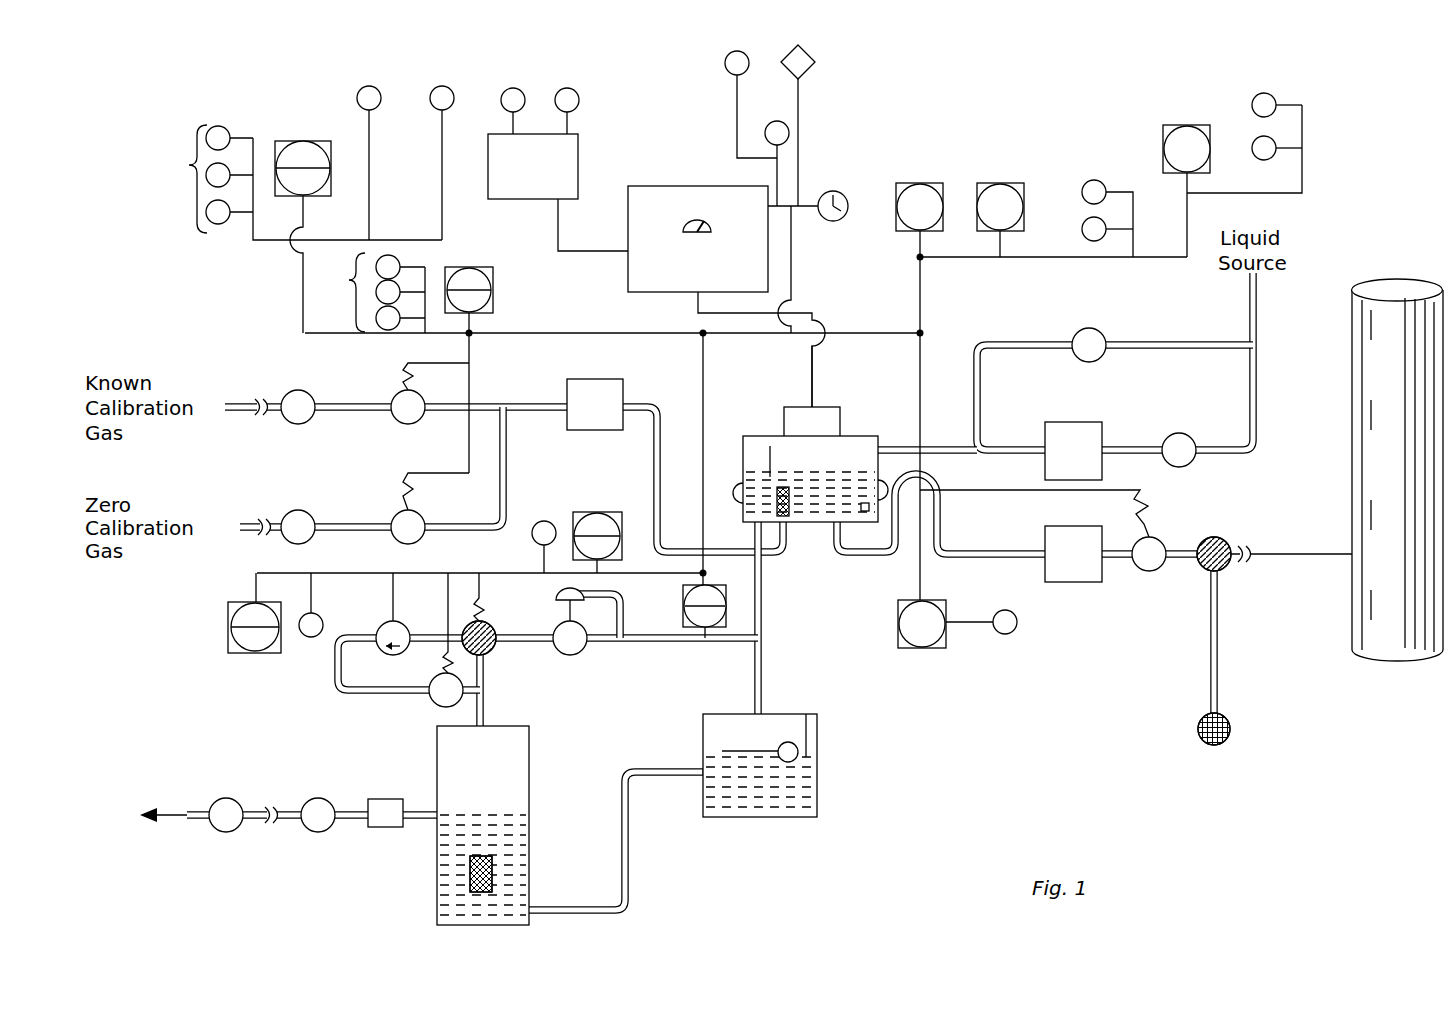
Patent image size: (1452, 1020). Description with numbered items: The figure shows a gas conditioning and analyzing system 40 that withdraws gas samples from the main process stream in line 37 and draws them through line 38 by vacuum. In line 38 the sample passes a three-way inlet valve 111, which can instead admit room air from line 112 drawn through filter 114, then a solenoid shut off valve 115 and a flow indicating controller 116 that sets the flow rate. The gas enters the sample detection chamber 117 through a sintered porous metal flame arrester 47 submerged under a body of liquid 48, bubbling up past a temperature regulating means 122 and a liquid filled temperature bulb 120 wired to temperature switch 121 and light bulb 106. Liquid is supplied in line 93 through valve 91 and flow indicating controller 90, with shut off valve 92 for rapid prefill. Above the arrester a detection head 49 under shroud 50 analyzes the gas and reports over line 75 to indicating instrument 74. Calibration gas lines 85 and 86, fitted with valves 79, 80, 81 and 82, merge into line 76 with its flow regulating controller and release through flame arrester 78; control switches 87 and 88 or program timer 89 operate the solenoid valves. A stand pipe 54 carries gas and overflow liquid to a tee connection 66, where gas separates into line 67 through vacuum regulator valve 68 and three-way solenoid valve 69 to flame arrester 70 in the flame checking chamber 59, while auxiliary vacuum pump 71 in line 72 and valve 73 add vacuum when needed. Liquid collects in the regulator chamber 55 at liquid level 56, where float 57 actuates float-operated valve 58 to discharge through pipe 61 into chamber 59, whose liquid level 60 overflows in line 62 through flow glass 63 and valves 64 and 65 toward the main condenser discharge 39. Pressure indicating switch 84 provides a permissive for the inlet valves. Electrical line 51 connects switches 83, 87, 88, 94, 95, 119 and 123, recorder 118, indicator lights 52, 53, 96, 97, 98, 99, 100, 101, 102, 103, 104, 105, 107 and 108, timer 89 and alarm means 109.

The main process stream line 37 is at (1352, 407).
The sample line 38 is at (1296, 553).
The exhaust line 39 is at (196, 822).
The gas conditioning and analyzing system 40 is at (1328, 106).
The sintered porous metal flame arrester 47 is at (833, 522).
The body of liquid 48 is at (745, 480).
The detection head 49 is at (784, 415).
The shroud 50 is at (857, 440).
The electrical line 51 is at (545, 333).
The indicator lights 52 is at (186, 162).
The indicator lights 53 is at (348, 278).
The stand pipe 54 is at (764, 636).
The liquid level regulator chamber 55 is at (817, 735).
The liquid level 56 is at (806, 712).
The float 57 is at (779, 745).
The float-operated valve 58 is at (707, 787).
The flame checking chamber 59 is at (529, 745).
The liquid level 60 is at (500, 814).
The pipe 61 is at (576, 915).
The line 62 is at (421, 808).
The flow glass 63 is at (386, 827).
The valve 64 is at (321, 798).
The valve 65 is at (228, 798).
The tee connection 66 is at (764, 641).
The gas line 67 is at (666, 645).
The vacuum regulator valve 68 is at (582, 650).
The three-way solenoid valve 69 is at (486, 626).
The sintered metal flame arrester 70 is at (470, 881).
The auxiliary vacuum pump 71 is at (401, 624).
The line 72 is at (347, 696).
The valve 73 is at (432, 703).
The indicating instrument 74 is at (652, 186).
The line 75 is at (698, 313).
The line 76 is at (521, 402).
The flame arrester 78 is at (790, 520).
The valve 79 is at (307, 421).
The solenoid operated valve 80 is at (417, 421).
The valve 81 is at (312, 537).
The solenoid operated valve 82 is at (402, 512).
The switch 83 is at (600, 512).
The pressure indicating switch 84 is at (683, 601).
The gas inlet line 85 is at (241, 404).
The gas inlet line 86 is at (257, 524).
The control switch 87 is at (469, 267).
The control switch 88 is at (303, 141).
The program timer 89 is at (828, 190).
The flow indicating controller 90 is at (1076, 422).
The valve 91 is at (1180, 433).
The shut off valve 92 is at (1093, 328).
The liquid line 93 is at (1257, 301).
The switch 94 is at (917, 183).
The switch 95 is at (997, 183).
The indicator light 96 is at (375, 109).
The indicator light 97 is at (446, 87).
The indicator light 98 is at (501, 104).
The indicator light 99 is at (579, 100).
The indicator light 100 is at (725, 66).
The indicator light 101 is at (772, 122).
The indicator light 102 is at (1088, 181).
The indicator light 103 is at (1083, 236).
The indicator light 104 is at (1262, 160).
The indicator light 105 is at (1265, 93).
The light bulb 106 is at (1014, 630).
The indicator light 107 is at (541, 521).
The indicator light 108 is at (303, 637).
The alarm means 109 is at (815, 62).
The three-way inlet valve 111 is at (1216, 537).
The room air line 112 is at (1210, 643).
The filter 114 is at (1230, 729).
The solenoid shut off valve 115 is at (1156, 537).
The flow indicating controller 116 is at (1090, 584).
The sample detection chamber 117 is at (880, 463).
The recorder 118 is at (578, 146).
The switch 119 is at (1175, 125).
The liquid filled temperature bulb 120 is at (868, 511).
The temperature switch 121 is at (930, 648).
The refrigeration or heating means 122 is at (733, 504).
The switch 123 is at (233, 656).